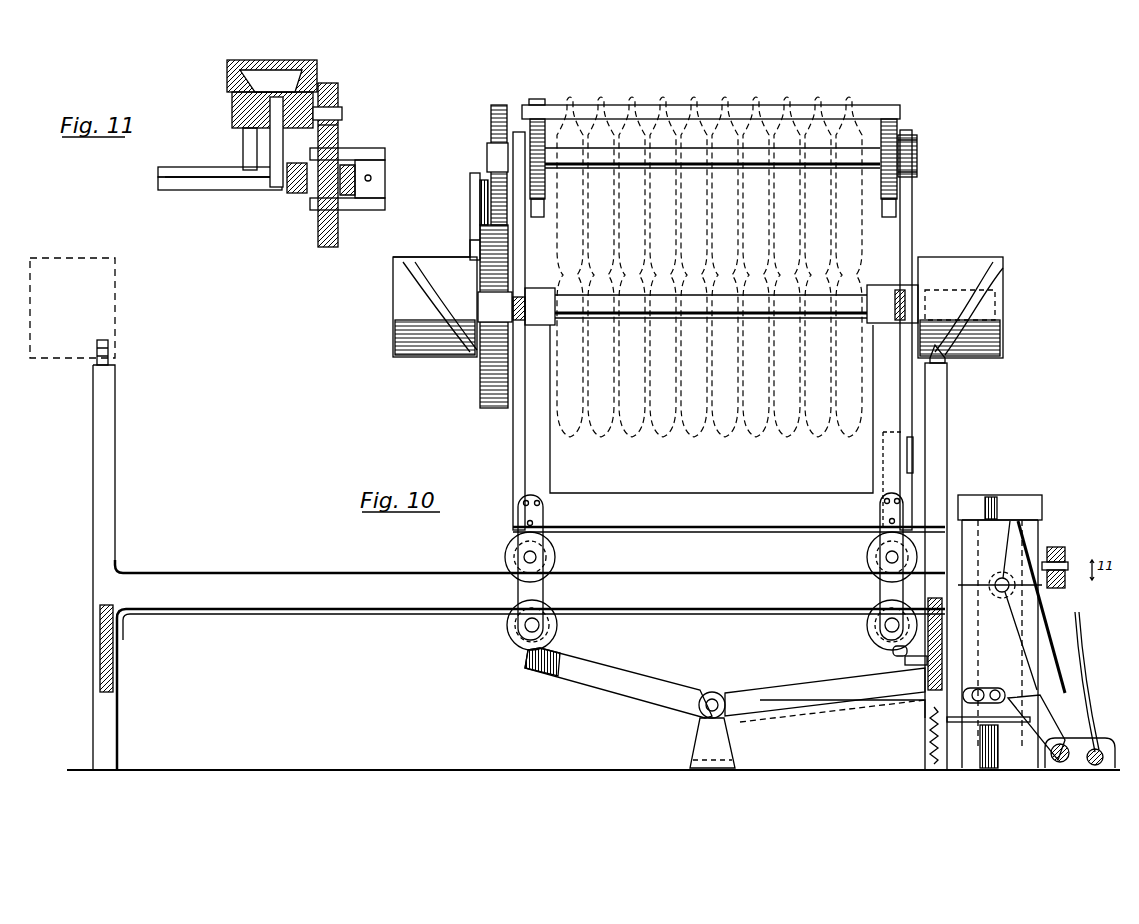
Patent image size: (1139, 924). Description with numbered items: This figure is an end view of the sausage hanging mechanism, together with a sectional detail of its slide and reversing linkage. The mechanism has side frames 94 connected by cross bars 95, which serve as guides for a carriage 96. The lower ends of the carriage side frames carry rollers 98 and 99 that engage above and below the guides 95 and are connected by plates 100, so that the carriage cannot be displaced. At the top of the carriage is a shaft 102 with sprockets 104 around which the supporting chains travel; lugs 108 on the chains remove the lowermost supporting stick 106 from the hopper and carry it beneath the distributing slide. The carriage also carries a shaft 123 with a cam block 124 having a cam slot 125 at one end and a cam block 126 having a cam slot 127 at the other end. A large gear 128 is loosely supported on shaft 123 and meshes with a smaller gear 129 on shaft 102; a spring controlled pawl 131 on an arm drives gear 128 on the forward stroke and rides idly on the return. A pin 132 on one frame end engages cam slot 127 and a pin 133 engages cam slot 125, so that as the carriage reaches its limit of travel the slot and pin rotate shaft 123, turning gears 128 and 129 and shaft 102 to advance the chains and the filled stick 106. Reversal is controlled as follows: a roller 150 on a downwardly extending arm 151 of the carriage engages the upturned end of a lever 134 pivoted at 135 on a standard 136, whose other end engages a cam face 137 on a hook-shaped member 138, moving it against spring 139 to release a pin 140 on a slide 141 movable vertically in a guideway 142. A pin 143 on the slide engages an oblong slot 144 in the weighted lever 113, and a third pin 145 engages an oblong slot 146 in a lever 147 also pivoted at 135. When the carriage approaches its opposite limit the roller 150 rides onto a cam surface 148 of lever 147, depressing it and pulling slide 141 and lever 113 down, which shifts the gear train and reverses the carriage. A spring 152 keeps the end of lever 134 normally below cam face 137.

In FIG. 10, the side frame 94 is at (117, 497).
In FIG. 10, the cross bar 95 is at (262, 572).
In FIG. 10, the carriage mechanism 96 is at (665, 500).
In FIG. 10, the roller 98 is at (507, 552).
In FIG. 10, the roller 99 is at (512, 636).
In FIG. 10, the plate 100 is at (516, 590).
In FIG. 10, the shaft 102 is at (666, 172).
In FIG. 10, the sprocket 104 is at (900, 140).
In FIG. 10, the supporting stick 106 is at (867, 114).
In FIG. 10, the lug 108 is at (537, 99).
In FIG. 10, the lever 113 is at (1060, 547).
In FIG. 11, the lever 113 is at (338, 90).
In FIG. 10, the shaft 123 is at (672, 322).
In FIG. 10, the cam block 124 is at (995, 283).
In FIG. 10, the cam slot 125 is at (985, 265).
In FIG. 10, the cam block 126 is at (393, 312).
In FIG. 10, the cam slot 127 is at (470, 252).
In FIG. 10, the large gear 128 is at (480, 392).
In FIG. 10, the smaller gear 129 is at (490, 118).
In FIG. 10, the spring controlled pawl 131 is at (470, 200).
In FIG. 10, the pin 132 is at (110, 350).
In FIG. 10, the pin 133 is at (947, 362).
In FIG. 10, the lever 134 is at (608, 672).
In FIG. 11, the lever 134 is at (252, 190).
In FIG. 10, the pivot 135 is at (716, 694).
In FIG. 10, the standard 136 is at (700, 742).
In FIG. 10, the cam face 137 is at (1035, 695).
In FIG. 10, the hook-shaped member 138 is at (1025, 615).
In FIG. 11, the hook-shaped member 138 is at (295, 195).
In FIG. 10, the spring 139 is at (1070, 640).
In FIG. 11, the spring 139 is at (372, 182).
In FIG. 10, the pin 140 is at (998, 598).
In FIG. 11, the pin 140 is at (243, 143).
In FIG. 10, the slide 141 is at (1002, 520).
In FIG. 11, the slide 141 is at (232, 110).
In FIG. 10, the guideway 142 is at (1040, 500).
In FIG. 11, the guideway 142 is at (317, 65).
In FIG. 10, the pin 143 is at (1070, 563).
In FIG. 11, the pin 143 is at (342, 115).
In FIG. 11, the oblong slot 144 is at (338, 128).
In FIG. 10, the third pin 145 is at (975, 705).
In FIG. 11, the third pin 145 is at (245, 160).
In FIG. 10, the oblong slot 146 is at (980, 690).
In FIG. 10, the lever 147 is at (800, 692).
In FIG. 11, the lever 147 is at (205, 180).
In FIG. 10, the cam surface 148 is at (905, 663).
In FIG. 11, the cam surface 148 is at (160, 178).
In FIG. 10, the roller 150 is at (893, 652).
In FIG. 10, the downwardly extending arm 151 is at (913, 447).
In FIG. 10, the spring 152 is at (928, 740).